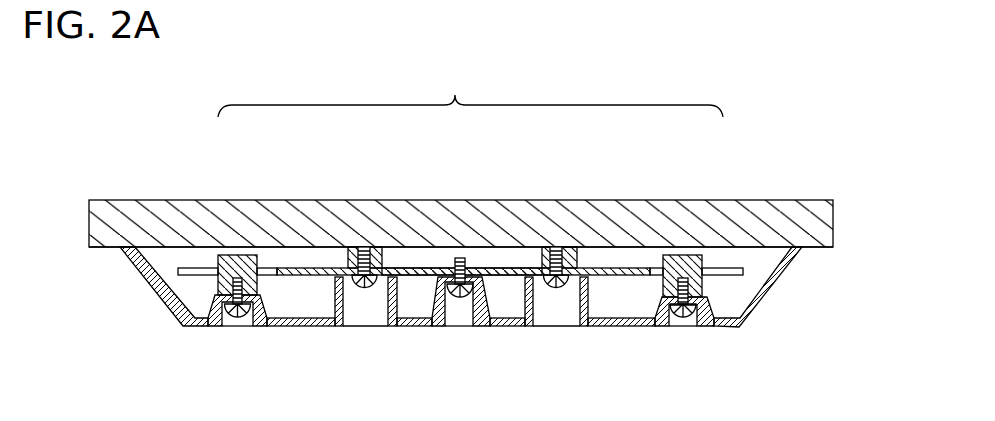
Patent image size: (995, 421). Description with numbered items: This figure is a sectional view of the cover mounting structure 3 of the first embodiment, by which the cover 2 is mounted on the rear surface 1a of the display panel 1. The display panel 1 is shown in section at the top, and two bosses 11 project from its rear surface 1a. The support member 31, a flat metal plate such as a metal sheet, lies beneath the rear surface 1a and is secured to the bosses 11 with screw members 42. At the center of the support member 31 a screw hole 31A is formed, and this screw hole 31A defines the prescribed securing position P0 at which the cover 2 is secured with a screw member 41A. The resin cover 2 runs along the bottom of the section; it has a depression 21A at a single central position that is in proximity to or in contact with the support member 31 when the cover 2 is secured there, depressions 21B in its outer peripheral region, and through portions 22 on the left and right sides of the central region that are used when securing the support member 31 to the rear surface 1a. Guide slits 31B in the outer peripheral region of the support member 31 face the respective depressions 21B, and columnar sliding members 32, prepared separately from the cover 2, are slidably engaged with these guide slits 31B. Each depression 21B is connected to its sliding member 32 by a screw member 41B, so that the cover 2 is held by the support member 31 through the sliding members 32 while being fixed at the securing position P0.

The display panel 1 is at (798, 200).
The rear surface 1a is at (758, 252).
The cover 2 is at (758, 303).
The cover mounting structure 3 is at (470, 88).
The boss 11 is at (349, 248).
The depression 21A is at (480, 300).
The depression 21B is at (251, 315).
The through portion 22 is at (344, 305).
The support member 31 is at (495, 268).
The screw hole 31A is at (450, 264).
The guide slit 31B is at (208, 271).
The sliding member 32 is at (240, 255).
The screw member 41A is at (457, 298).
The screw member 41B is at (233, 315).
The screw member 42 is at (363, 288).
The securing position P0 is at (460, 256).